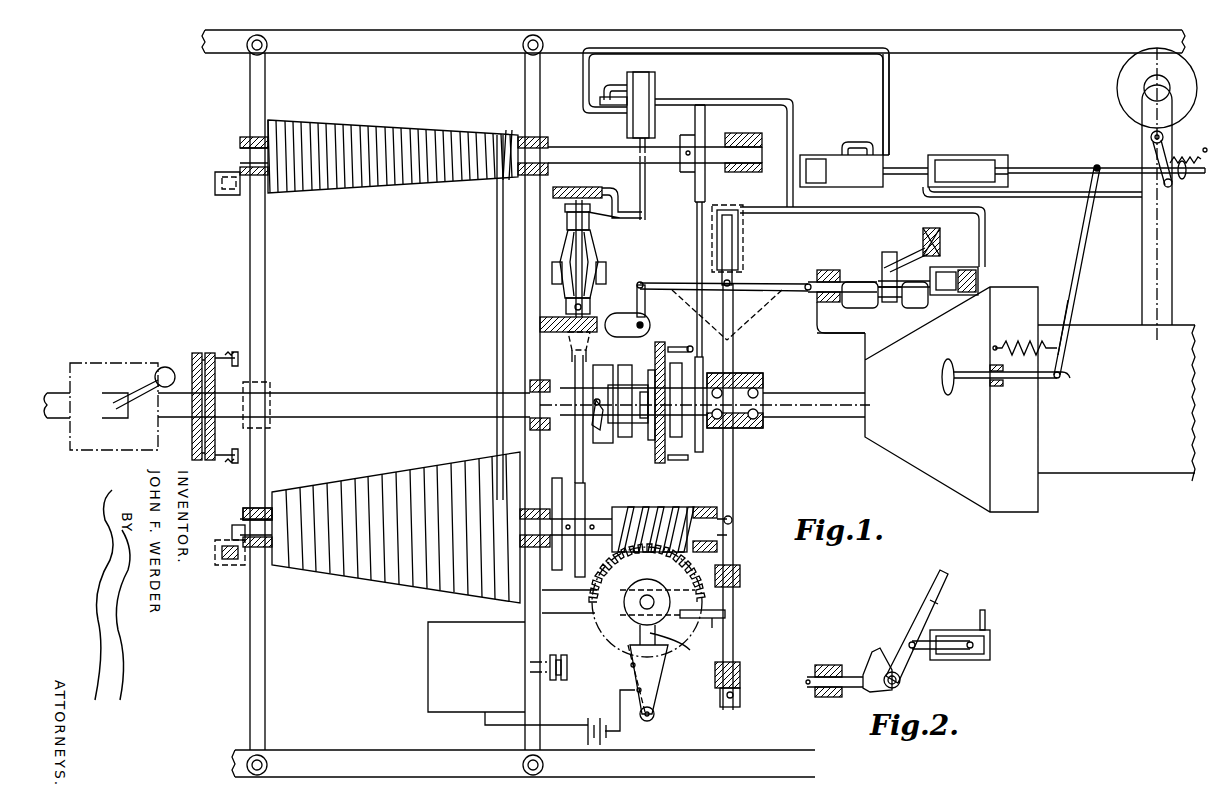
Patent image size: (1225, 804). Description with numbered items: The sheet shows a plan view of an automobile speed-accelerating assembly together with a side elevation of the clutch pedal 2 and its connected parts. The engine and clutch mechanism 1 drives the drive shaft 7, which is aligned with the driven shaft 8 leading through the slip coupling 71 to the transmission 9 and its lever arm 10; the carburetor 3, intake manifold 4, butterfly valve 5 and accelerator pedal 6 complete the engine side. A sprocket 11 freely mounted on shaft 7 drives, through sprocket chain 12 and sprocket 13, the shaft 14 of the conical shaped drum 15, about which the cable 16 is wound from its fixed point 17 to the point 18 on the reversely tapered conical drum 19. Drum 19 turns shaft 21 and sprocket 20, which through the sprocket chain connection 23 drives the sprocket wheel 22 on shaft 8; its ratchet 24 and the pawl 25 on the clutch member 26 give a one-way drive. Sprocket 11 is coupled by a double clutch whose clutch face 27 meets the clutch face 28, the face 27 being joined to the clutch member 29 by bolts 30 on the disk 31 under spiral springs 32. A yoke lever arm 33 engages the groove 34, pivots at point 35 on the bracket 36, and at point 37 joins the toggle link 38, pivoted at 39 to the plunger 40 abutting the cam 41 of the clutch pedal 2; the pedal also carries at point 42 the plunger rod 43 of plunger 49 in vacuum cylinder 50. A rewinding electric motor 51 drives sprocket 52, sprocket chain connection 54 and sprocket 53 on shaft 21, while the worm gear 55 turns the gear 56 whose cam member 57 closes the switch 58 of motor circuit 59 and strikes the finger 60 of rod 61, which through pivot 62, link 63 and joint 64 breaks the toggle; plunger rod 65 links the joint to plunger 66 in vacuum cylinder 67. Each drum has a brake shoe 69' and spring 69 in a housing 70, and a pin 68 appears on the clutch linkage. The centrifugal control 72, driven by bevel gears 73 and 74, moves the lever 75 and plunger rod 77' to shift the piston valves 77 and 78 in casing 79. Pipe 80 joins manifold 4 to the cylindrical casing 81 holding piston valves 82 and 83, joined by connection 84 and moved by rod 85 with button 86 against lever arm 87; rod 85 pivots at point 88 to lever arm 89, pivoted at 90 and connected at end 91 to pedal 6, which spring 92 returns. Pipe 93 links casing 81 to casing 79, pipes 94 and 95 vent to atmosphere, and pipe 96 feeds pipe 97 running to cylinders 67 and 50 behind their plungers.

In FIG. 1, the engine and clutch mechanism 1 is at (932, 470).
In FIG. 1, the clutch pedal 2 is at (915, 250).
In FIG. 2, the clutch pedal 2 is at (932, 590).
In FIG. 1, the carburetor 3 is at (1192, 95).
In FIG. 1, the intake manifold 4 is at (1172, 240).
In FIG. 1, the butterfly valve 5 is at (1150, 135).
In FIG. 1, the accelerator pedal 6 is at (942, 385).
In FIG. 1, the drive shaft 7 is at (805, 418).
In FIG. 1, the driven shaft 8 is at (372, 393).
In FIG. 1, the transmission 9 is at (138, 448).
In FIG. 1, the lever arm 10 is at (167, 367).
In FIG. 1, the sprocket 11 is at (720, 430).
In FIG. 1, the sprocket chain 12 is at (696, 212).
In FIG. 1, the sprocket 13 is at (706, 132).
In FIG. 1, the shaft 14 is at (652, 163).
In FIG. 1, the conical shaped drum 15 is at (430, 132).
In FIG. 1, the cable 16 is at (497, 265).
In FIG. 1, the point 17 is at (517, 122).
In FIG. 1, the point 18 is at (262, 550).
In FIG. 1, the conical drum 19 is at (398, 585).
In FIG. 1, the sprocket 20 is at (586, 500).
In FIG. 1, the shaft 21 is at (700, 507).
In FIG. 1, the sprocket wheel 22 is at (595, 432).
In FIG. 1, the sprocket chain connection 23 is at (585, 468).
In FIG. 1, the ratchet 24 is at (600, 365).
In FIG. 1, the pawl 25 is at (622, 425).
In FIG. 1, the clutch member 26 is at (625, 365).
In FIG. 1, the clutch face 27 is at (703, 362).
In FIG. 1, the clutch face 28 is at (682, 360).
In FIG. 1, the clutch member 29 is at (650, 445).
In FIG. 1, the bolts 30 is at (678, 461).
In FIG. 1, the disk 31 is at (661, 390).
In FIG. 1, the spiral springs 32 is at (679, 345).
In FIG. 1, the yoke lever arm 33 is at (636, 298).
In FIG. 1, the groove 34 is at (644, 432).
In FIG. 1, the point 35 is at (627, 316).
In FIG. 1, the bracket 36 is at (556, 317).
In FIG. 1, the point 37 is at (640, 282).
In FIG. 1, the toggle link 38 is at (790, 283).
In FIG. 1, the point 39 is at (822, 270).
In FIG. 1, the plunger 40 is at (848, 283).
In FIG. 2, the plunger 40 is at (805, 682).
In FIG. 1, the cam 41 is at (872, 290).
In FIG. 2, the cam 41 is at (874, 652).
In FIG. 2, the point 42 is at (912, 650).
In FIG. 2, the plunger rod 43 is at (944, 640).
In FIG. 1, the plunger 49 is at (944, 290).
In FIG. 2, the plunger 49 is at (968, 658).
In FIG. 1, the vacuum cylinder 50 is at (960, 267).
In FIG. 2, the vacuum cylinder 50 is at (948, 660).
In FIG. 1, the electric motor 51 is at (428, 680).
In FIG. 1, the sprocket 52 is at (566, 664).
In FIG. 1, the sprocket 53 is at (555, 478).
In FIG. 1, the sprocket chain connection 54 is at (595, 605).
In FIG. 1, the worm gear 55 is at (628, 507).
In FIG. 1, the gear 56 is at (690, 568).
In FIG. 1, the cam member 57 is at (670, 648).
In FIG. 1, the switch 58 is at (660, 680).
In FIG. 1, the motor circuit 59 is at (480, 727).
In FIG. 1, the finger 60 is at (712, 622).
In FIG. 1, the rod 61 is at (735, 636).
In FIG. 1, the pivot connection 62 is at (733, 519).
In FIG. 1, the link 63 is at (735, 360).
In FIG. 1, the pivot point 64 is at (730, 286).
In FIG. 1, the plunger rod 65 is at (740, 258).
In FIG. 1, the plunger 66 is at (742, 240).
In FIG. 1, the vacuum cylinder 67 is at (738, 198).
In FIG. 1, the pin 68 is at (627, 325).
In FIG. 1, the spring 69 is at (238, 365).
In FIG. 1, the brake shoe 69' is at (261, 357).
In FIG. 1, the housing 70 is at (230, 195).
In FIG. 1, the slip coupling 71 is at (192, 445).
In FIG. 1, the centrifugal control 72 is at (600, 268).
In FIG. 1, the bevel gear 73 is at (568, 340).
In FIG. 1, the bevel gear 74 is at (572, 358).
In FIG. 1, the lever 75 is at (626, 225).
In FIG. 1, the piston valve 77 is at (623, 140).
In FIG. 1, the plunger rod 77' is at (626, 191).
In FIG. 1, the plunger valve 78 is at (655, 86).
In FIG. 1, the casing 79 is at (617, 80).
In FIG. 1, the pipe 80 is at (1035, 197).
In FIG. 1, the cylindrical casing 81 is at (918, 166).
In FIG. 1, the piston valve 82 is at (960, 156).
In FIG. 1, the piston valve 83 is at (832, 160).
In FIG. 1, the connection 84 is at (890, 155).
In FIG. 1, the rod 85 is at (1040, 167).
In FIG. 1, the button 86 is at (1186, 172).
In FIG. 1, the lever arm 87 is at (1170, 188).
In FIG. 1, the point 88 is at (1105, 160).
In FIG. 1, the lever arm 89 is at (1083, 230).
In FIG. 1, the point 90 is at (1075, 270).
In FIG. 1, the end 91 is at (1063, 378).
In FIG. 1, the spring 92 is at (1025, 340).
In FIG. 1, the pipe 93 is at (820, 55).
In FIG. 1, the pipe 94 is at (870, 142).
In FIG. 1, the pipe 95 is at (604, 103).
In FIG. 1, the pipe 96 is at (740, 100).
In FIG. 1, the pipe 97 is at (836, 212).